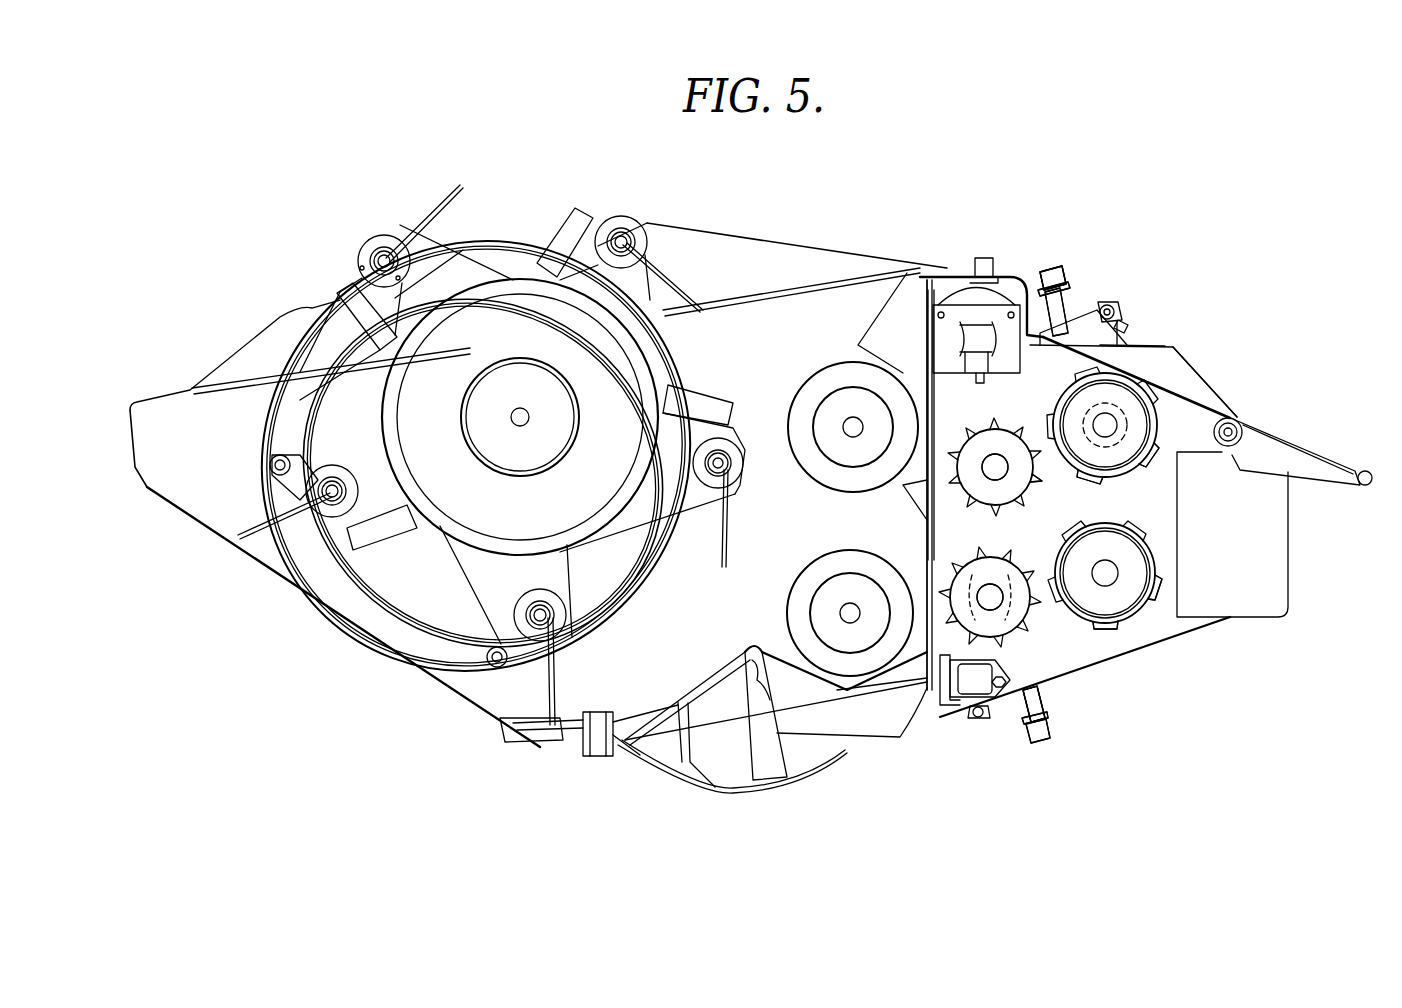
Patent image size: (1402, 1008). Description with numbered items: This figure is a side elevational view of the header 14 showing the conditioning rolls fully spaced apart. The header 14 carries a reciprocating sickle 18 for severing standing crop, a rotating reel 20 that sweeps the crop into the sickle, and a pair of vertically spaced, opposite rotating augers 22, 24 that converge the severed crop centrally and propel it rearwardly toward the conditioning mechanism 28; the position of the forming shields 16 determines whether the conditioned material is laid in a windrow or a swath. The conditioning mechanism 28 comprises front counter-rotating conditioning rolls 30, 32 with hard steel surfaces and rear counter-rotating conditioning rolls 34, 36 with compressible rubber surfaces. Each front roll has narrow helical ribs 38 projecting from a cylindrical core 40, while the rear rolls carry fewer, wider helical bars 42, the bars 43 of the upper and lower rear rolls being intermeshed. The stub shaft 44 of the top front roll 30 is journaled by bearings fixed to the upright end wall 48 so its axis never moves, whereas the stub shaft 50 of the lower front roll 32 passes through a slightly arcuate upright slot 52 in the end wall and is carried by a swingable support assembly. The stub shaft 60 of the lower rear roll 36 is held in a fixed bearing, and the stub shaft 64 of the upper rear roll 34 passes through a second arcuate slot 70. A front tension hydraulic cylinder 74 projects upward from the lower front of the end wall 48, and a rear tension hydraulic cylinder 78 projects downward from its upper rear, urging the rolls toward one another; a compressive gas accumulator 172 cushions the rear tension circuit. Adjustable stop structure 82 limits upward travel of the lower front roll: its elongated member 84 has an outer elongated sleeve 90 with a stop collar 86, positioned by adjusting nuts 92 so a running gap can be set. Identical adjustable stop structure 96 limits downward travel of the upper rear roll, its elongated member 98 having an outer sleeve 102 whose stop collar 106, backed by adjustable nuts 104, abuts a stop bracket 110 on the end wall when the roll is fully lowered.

The header 14 is at (808, 223).
The forming shields 16 is at (1322, 487).
The reciprocating sickle 18 is at (567, 738).
The rotating reel 20 is at (393, 235).
The auger 22 is at (802, 395).
The auger 24 is at (795, 622).
The conditioning mechanism 28 is at (1203, 353).
The top front conditioning roll 30 is at (1018, 428).
The lower front conditioning roll 32 is at (1030, 627).
The upper rear conditioning roll 34 is at (1157, 458).
The lower rear conditioning roll 36 is at (1163, 550).
The ribs 38 is at (1040, 480).
The cylindrical core 40 is at (956, 458).
The bars 42 is at (1118, 478).
The roller lugs 43 is at (1145, 460).
The stub shaft 44 is at (987, 470).
The end wall 48 is at (1203, 377).
The stub shaft 50 is at (995, 608).
The slot 52 is at (988, 546).
The stub shaft 60 is at (1112, 575).
The stub shaft 64 is at (1110, 425).
The slot 70 is at (1140, 438).
The tension hydraulic cylinder 74 is at (990, 710).
The tension hydraulic cylinder 78 is at (1120, 312).
The adjustable stop structure 82 is at (1052, 748).
The elongated member 84 is at (1026, 712).
The stop collar 86 is at (1050, 730).
The outer elongated sleeve 90 is at (1038, 710).
The adjusting nuts 92 is at (1036, 742).
The adjustable stop structure 96 is at (1063, 259).
The elongated member 98 is at (1077, 302).
The outer sleeve 102 is at (1042, 320).
The adjustable nuts 104 is at (1045, 268).
The stop collar 106 is at (1068, 262).
The stop bracket 110 is at (1112, 338).
The compressive gas accumulator 172 is at (963, 298).